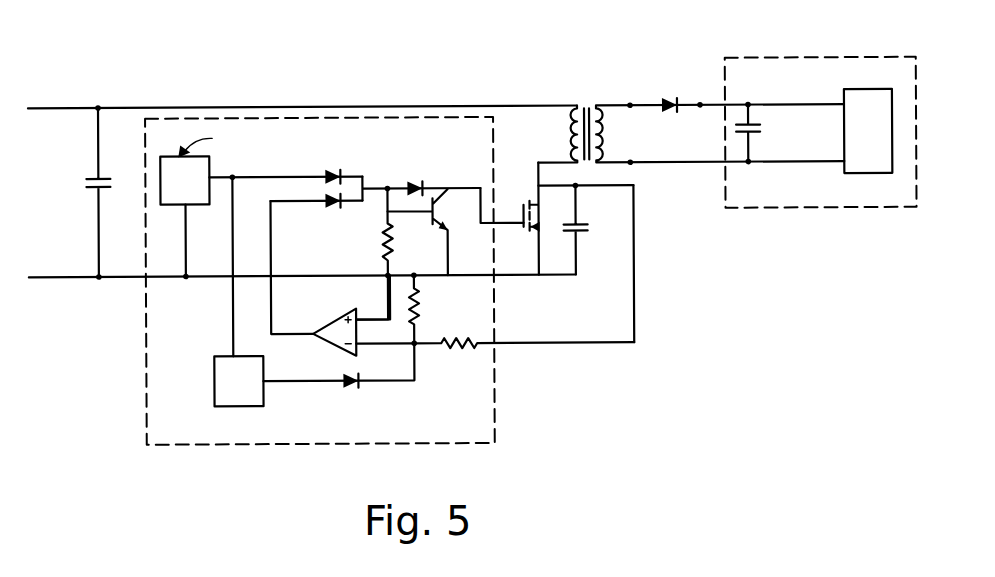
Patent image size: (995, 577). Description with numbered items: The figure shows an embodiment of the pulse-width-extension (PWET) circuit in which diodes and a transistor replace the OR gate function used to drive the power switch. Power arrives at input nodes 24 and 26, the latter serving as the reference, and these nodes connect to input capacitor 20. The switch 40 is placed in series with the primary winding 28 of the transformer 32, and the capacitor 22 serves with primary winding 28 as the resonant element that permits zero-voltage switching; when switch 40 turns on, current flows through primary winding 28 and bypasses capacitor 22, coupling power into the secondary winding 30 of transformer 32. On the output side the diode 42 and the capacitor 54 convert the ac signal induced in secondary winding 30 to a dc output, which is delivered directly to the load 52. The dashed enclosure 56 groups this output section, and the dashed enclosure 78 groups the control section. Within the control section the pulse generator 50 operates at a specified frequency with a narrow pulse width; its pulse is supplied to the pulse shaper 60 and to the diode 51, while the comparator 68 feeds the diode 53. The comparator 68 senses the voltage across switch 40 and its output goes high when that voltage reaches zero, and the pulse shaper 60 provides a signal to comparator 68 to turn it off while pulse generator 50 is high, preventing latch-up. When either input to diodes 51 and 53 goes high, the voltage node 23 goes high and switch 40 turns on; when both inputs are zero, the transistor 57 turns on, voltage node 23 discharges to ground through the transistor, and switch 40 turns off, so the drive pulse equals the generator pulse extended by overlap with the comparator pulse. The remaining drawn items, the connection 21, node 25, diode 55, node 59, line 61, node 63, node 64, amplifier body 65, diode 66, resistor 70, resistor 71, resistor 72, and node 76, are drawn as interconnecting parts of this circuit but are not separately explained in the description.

The input capacitor 20 is at (92, 184).
The drain connection line 21 is at (536, 186).
The capacitor 22 is at (588, 230).
The voltage node 23 is at (443, 192).
The input node 24 is at (97, 107).
The source node 25 is at (540, 280).
The input node 26 is at (98, 276).
The primary winding 28 is at (573, 137).
The secondary winding 30 is at (602, 140).
The transformer 32 is at (580, 106).
The switch 40 is at (522, 216).
The diode 42 is at (671, 104).
The pulse generator 50 is at (237, 201).
The diode 51 is at (326, 176).
The load 52 is at (868, 131).
The diode 53 is at (326, 204).
The capacitor 54 is at (757, 134).
The diode 55 is at (415, 185).
The output circuit 56 is at (815, 213).
The transistor 57 is at (444, 222).
The node 59 is at (364, 189).
The pulse shaper 60 is at (238, 381).
The non-inverting input line 61 is at (382, 320).
The node 63 is at (410, 348).
The node 64 is at (238, 176).
The comparator 65 is at (283, 334).
The diode 66 is at (351, 388).
The comparator 68 is at (332, 330).
The resistor 70 is at (420, 308).
The resistor 71 is at (385, 240).
The resistor 72 is at (524, 357).
The node 76 is at (385, 275).
The control circuit 78 is at (494, 390).